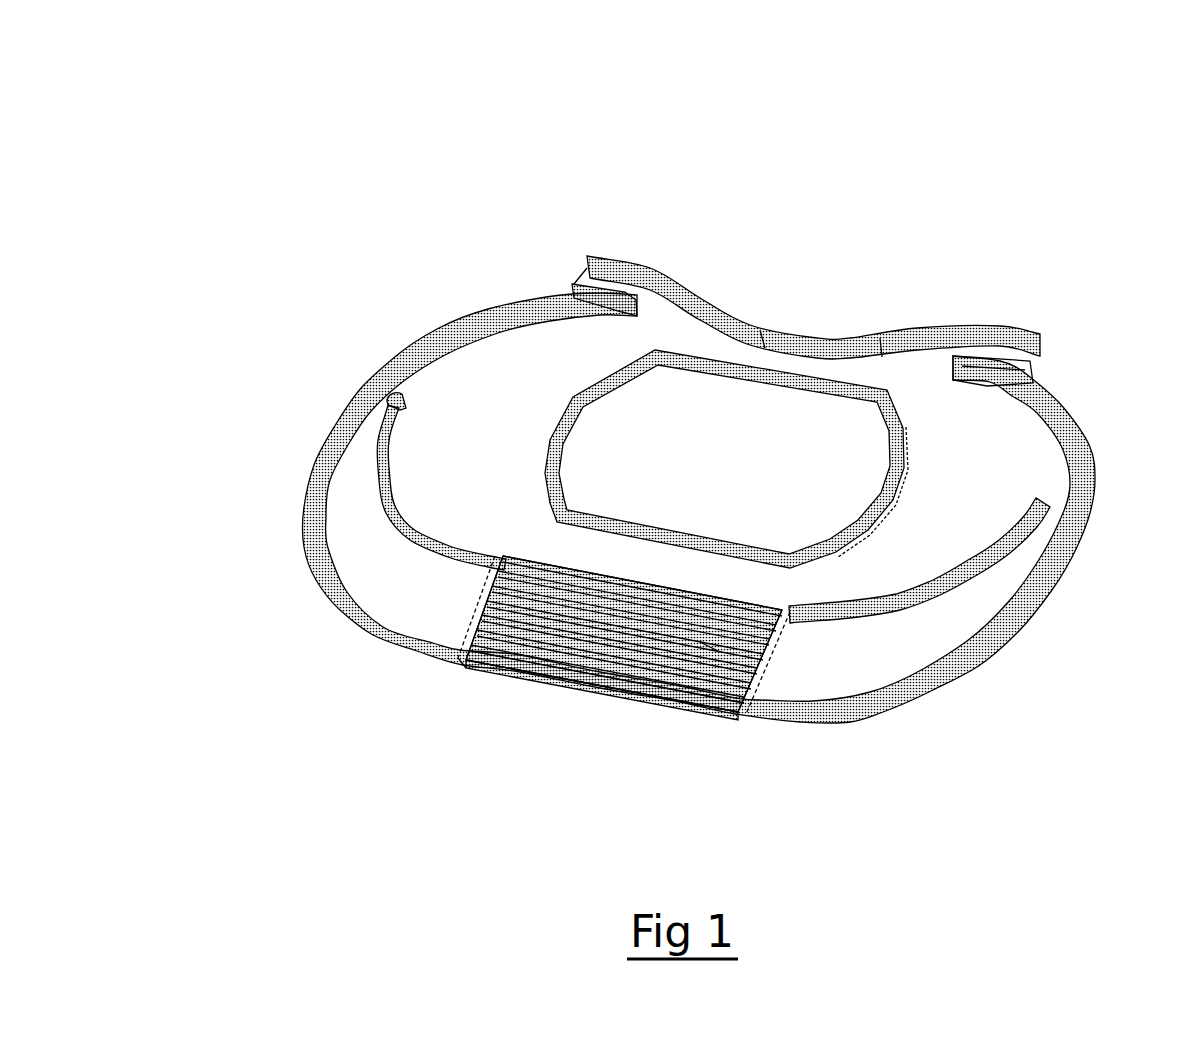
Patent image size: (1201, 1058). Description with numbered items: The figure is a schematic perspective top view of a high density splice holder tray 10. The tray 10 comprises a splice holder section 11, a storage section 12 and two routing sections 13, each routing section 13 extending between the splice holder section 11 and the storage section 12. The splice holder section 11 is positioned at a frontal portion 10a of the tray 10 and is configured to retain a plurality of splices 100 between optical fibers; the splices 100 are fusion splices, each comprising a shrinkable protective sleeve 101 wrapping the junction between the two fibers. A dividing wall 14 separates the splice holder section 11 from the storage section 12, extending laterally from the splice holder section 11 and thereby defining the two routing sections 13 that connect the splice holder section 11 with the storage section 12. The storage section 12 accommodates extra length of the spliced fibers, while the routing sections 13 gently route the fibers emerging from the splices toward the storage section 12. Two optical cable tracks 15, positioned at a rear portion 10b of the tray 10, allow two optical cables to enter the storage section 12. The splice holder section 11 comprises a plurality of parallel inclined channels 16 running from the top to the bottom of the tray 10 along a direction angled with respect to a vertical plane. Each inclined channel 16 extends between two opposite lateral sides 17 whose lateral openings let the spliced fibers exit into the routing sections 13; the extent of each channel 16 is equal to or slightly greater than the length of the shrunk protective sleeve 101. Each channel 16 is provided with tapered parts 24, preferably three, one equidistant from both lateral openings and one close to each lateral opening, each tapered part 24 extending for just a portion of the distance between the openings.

The high density splice holder tray 10 is at (283, 193).
The frontal portion 10a is at (668, 697).
The rear portion 10b is at (768, 332).
The splice holder section 11 is at (612, 702).
The storage section 12 is at (485, 400).
The routing sections 13 is at (370, 580).
The dividing wall 14 is at (390, 467).
The optical cable tracks 15 is at (607, 282).
The inclined channels 16 is at (552, 672).
The lateral sides 17 is at (477, 590).
The tapered part 24 is at (542, 556).
The splices 100 is at (708, 642).
The shrinkable protective sleeve 101 is at (467, 667).